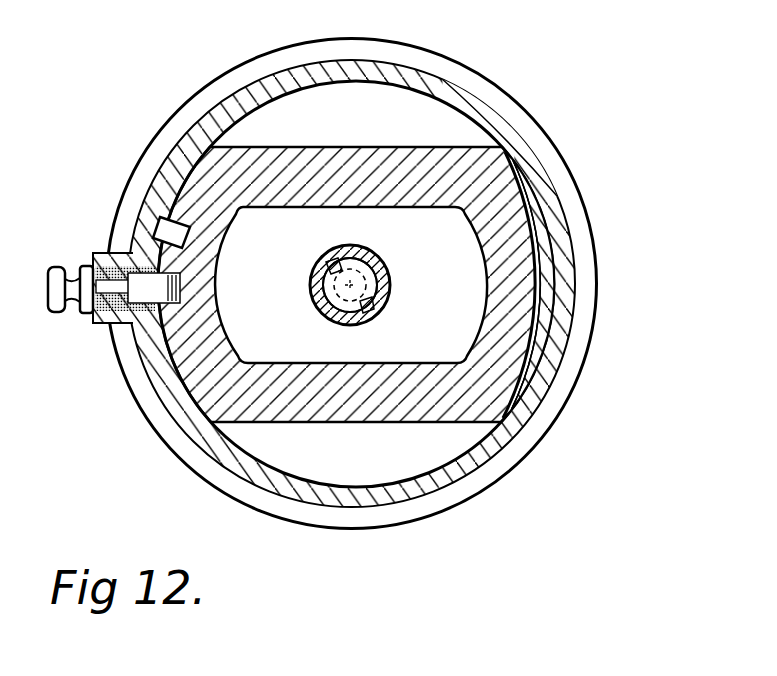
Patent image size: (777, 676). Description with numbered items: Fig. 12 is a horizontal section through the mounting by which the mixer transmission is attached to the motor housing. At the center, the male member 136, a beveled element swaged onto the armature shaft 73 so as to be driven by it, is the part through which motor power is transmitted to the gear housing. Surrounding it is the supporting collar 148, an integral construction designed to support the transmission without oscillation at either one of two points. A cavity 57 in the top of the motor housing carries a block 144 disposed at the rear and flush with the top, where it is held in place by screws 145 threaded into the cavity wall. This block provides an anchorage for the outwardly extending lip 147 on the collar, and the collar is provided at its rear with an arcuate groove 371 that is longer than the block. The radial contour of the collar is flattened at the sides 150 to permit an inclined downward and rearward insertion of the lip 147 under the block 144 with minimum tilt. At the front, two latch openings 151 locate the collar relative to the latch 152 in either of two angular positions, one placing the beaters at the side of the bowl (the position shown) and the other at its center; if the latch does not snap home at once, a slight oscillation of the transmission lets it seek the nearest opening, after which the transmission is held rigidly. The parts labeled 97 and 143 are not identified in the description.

The cavity 57 is at (462, 483).
The armature shaft 73 is at (352, 246).
The housing outer ring 97 is at (522, 460).
The male member 136 is at (316, 275).
The bore 143 is at (327, 298).
The block 144 is at (537, 257).
The screws 145 is at (540, 212).
The lip 147 is at (560, 306).
The supporting collar 148 is at (415, 400).
The flattened sides 150 is at (335, 147).
The latch openings 151 is at (163, 222).
The latch 152 is at (140, 300).
The arcuate groove 371 is at (523, 372).